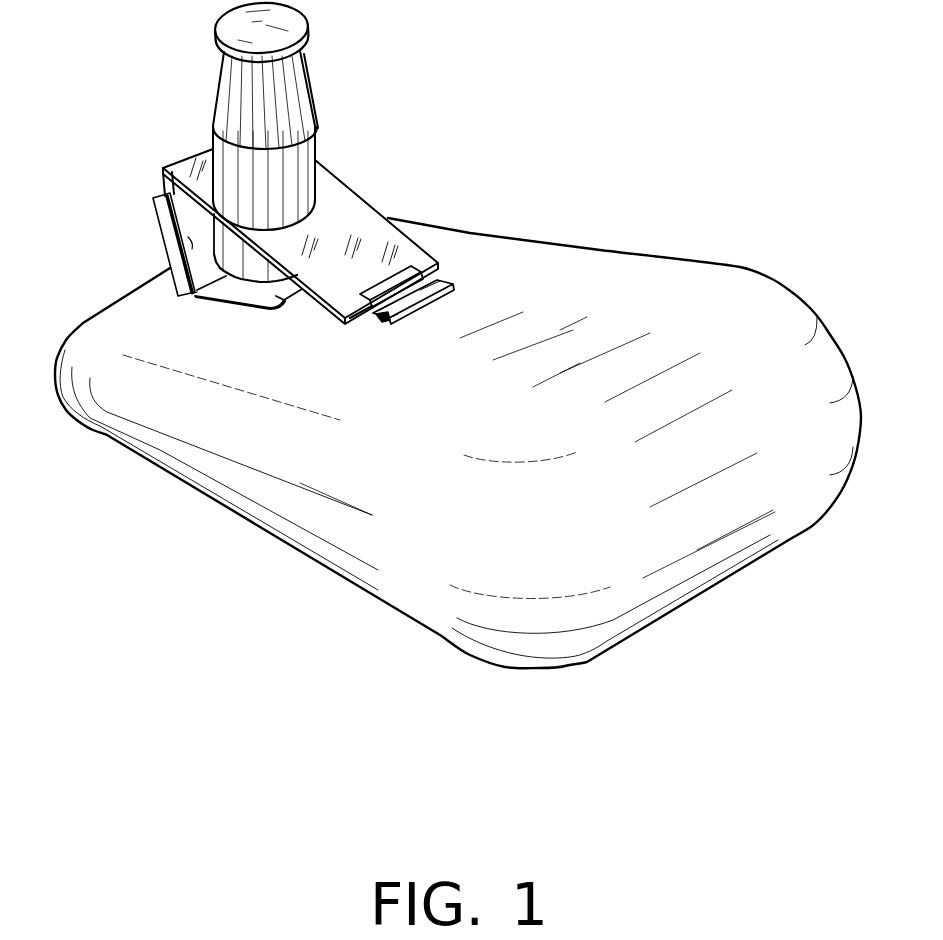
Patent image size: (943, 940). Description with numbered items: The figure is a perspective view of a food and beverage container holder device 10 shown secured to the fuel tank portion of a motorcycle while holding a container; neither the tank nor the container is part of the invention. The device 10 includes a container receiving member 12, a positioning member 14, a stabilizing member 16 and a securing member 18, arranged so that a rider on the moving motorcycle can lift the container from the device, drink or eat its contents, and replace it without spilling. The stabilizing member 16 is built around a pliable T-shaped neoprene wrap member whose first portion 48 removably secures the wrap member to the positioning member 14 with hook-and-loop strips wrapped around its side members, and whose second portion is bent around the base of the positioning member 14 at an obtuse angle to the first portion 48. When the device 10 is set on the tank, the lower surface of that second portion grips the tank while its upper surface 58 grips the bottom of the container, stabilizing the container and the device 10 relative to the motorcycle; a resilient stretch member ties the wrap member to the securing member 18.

The food and beverage container holder device 10 is at (470, 203).
The container receiving member 12 is at (338, 193).
The positioning member 14 is at (160, 188).
The stabilizing member 16 is at (158, 224).
The securing member 18 is at (446, 270).
The first portion of the wrap member 48 is at (192, 236).
The upper surface of the second portion 58 is at (290, 302).